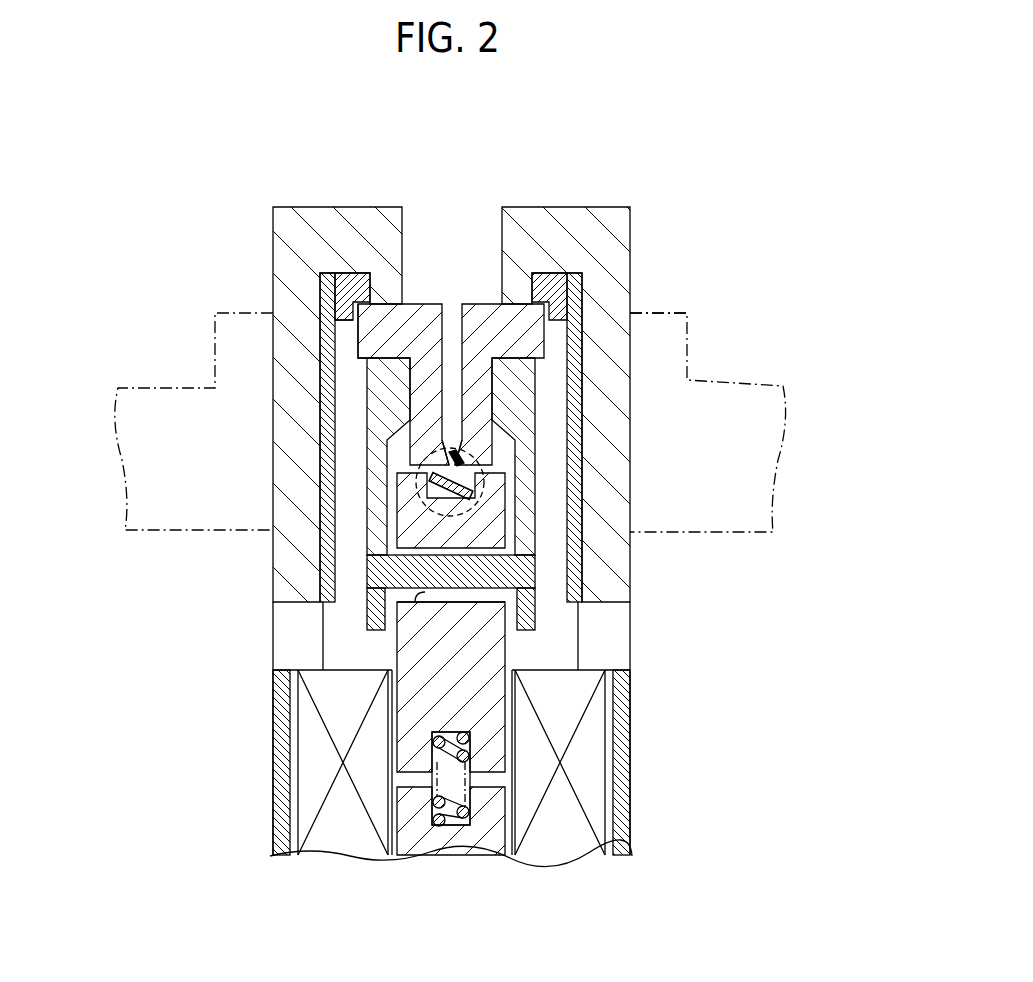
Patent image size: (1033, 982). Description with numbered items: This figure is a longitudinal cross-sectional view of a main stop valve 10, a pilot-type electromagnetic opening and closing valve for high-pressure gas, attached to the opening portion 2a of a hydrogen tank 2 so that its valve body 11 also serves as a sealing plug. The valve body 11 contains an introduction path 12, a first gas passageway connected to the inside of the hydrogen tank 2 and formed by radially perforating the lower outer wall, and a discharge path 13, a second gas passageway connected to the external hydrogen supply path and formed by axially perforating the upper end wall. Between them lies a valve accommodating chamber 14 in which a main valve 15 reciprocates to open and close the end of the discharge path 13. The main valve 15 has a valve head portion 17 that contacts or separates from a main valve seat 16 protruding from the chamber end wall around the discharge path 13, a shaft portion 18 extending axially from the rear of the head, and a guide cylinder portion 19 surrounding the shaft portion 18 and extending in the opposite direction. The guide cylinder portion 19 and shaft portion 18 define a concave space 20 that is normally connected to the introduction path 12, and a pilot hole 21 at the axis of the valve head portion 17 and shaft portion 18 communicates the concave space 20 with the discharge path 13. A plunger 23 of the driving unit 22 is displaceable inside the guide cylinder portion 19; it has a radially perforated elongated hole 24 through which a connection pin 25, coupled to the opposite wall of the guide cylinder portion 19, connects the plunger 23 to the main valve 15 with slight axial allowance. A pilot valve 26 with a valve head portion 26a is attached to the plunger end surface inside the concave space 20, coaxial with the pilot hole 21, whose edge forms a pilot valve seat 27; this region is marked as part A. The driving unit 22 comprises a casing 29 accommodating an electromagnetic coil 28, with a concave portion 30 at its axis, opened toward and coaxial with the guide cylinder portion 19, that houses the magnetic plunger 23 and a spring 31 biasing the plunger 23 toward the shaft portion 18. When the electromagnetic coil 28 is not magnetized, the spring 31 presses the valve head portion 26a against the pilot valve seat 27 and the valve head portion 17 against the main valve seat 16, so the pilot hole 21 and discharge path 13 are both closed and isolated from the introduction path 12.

The hydrogen tank 2 is at (735, 380).
The opening portion 2a is at (620, 345).
The main stop valve 10 is at (650, 172).
The valve body 11 is at (509, 375).
The introduction path 12 is at (290, 603).
The discharge path 13 is at (405, 232).
The valve accommodating chamber 14 is at (352, 362).
The main valve 15 is at (355, 339).
The main valve seat 16 is at (562, 290).
The valve head portion 17 is at (385, 312).
The shaft portion 18 is at (425, 388).
The guide cylinder portion 19 is at (395, 493).
The concave space 20 is at (304, 367).
The pilot hole 21 is at (454, 322).
The driving unit 22 is at (501, 770).
The plunger 23 is at (457, 682).
The elongated hole 24 is at (420, 597).
The connection pin 25 is at (370, 574).
The pilot valve 26 is at (470, 486).
The valve head portion 26a is at (472, 470).
The pilot valve seat 27 is at (455, 462).
The electromagnetic coil 28 is at (562, 832).
The casing 29 is at (618, 845).
The concave portion 30 is at (396, 782).
The spring 31 is at (434, 823).
The part A is at (418, 494).